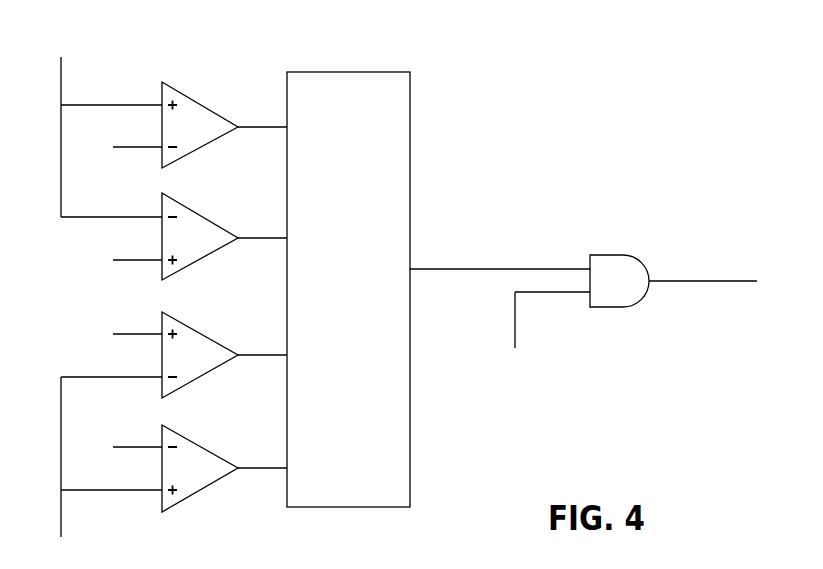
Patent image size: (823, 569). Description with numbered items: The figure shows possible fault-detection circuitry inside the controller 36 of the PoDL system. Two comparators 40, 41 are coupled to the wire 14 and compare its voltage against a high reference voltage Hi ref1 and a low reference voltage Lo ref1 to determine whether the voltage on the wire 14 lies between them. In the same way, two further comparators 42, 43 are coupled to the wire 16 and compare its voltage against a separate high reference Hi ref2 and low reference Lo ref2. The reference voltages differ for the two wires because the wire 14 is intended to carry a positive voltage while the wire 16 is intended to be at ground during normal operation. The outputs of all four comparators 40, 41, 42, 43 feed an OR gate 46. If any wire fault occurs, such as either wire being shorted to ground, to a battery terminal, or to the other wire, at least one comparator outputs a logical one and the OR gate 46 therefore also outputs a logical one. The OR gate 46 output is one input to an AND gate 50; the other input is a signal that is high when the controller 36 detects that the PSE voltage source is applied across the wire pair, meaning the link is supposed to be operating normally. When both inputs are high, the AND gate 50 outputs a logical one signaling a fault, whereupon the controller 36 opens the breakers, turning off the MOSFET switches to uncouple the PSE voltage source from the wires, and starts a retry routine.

The controller 36 is at (708, 164).
The wire 14 is at (91, 122).
The wire 16 is at (91, 471).
The comparator 40 is at (198, 100).
The comparator 41 is at (198, 212).
The comparator 42 is at (198, 328).
The comparator 43 is at (198, 438).
The OR gate 46 is at (410, 117).
The AND gate 50 is at (609, 255).